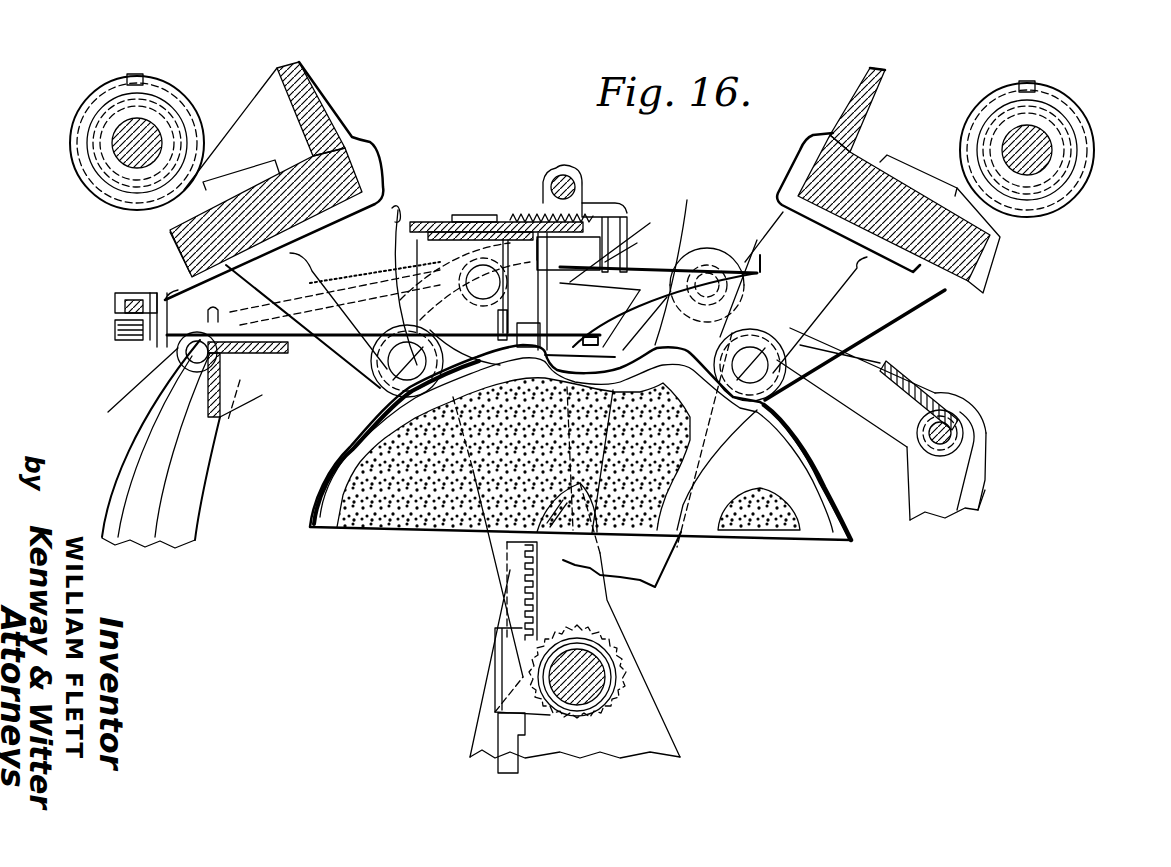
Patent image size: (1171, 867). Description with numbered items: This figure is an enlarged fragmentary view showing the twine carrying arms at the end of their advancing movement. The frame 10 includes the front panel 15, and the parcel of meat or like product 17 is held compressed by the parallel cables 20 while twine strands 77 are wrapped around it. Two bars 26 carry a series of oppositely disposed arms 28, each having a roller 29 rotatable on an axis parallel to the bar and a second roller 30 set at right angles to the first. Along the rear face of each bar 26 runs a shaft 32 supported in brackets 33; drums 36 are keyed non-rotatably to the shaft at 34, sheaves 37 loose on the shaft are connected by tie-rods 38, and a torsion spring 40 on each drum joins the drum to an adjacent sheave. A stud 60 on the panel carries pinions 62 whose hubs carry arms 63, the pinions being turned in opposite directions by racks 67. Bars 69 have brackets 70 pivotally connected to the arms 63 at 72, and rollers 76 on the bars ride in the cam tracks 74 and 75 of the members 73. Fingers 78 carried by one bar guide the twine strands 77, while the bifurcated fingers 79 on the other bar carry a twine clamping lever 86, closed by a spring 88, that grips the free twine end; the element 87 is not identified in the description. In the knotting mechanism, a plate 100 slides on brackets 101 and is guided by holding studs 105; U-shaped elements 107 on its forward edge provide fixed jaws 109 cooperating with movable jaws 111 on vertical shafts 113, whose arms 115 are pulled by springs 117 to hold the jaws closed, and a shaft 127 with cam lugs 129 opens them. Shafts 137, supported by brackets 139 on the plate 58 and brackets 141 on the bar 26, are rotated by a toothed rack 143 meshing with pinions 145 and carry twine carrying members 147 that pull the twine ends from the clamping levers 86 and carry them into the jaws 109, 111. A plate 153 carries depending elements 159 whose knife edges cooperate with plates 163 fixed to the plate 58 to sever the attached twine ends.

The frame 10 is at (673, 747).
The front panel 15 is at (647, 728).
The parcel of meat or like product 17 is at (780, 532).
The cables 20 is at (322, 500).
The bars 26 is at (320, 125).
The arms 28 is at (375, 378).
The roller 29 is at (385, 405).
The second roller 30 is at (365, 422).
The shaft 32 is at (125, 150).
The brackets 33 is at (205, 181).
The key connection 34 is at (110, 105).
The drums 36 is at (92, 130).
The sheaves 37 is at (185, 96).
The tie-rods 38 is at (128, 80).
The torsion spring 40 is at (180, 110).
The plate 58 is at (533, 370).
The stud 60 is at (597, 677).
The pinions 62 is at (633, 688).
The arms 63 is at (602, 610).
The racks 67 is at (503, 747).
The bars 69 is at (210, 420).
The brackets 70 is at (262, 393).
The pivotal connection 72 is at (465, 272).
The members 73 is at (197, 538).
The cam track 74 is at (145, 540).
The cam track 75 is at (958, 500).
The rollers 76 is at (178, 367).
The twine strands 77 is at (120, 402).
The fingers 78 is at (401, 273).
The fingers 79 is at (890, 348).
The twine clamping lever 86 is at (681, 259).
The lever arm 87 is at (620, 243).
The spring 88 is at (667, 283).
The plate 100 is at (423, 218).
The brackets 101 is at (469, 282).
The holding studs 105 is at (458, 215).
The U-shaped elements 107 is at (630, 213).
The fixed twine holding jaw 109 is at (588, 337).
The movable jaw 111 is at (665, 311).
The vertical shaft 113 is at (639, 245).
The arm 115 is at (593, 197).
The springs 117 is at (527, 217).
The shaft 127 is at (553, 180).
The cam lugs 129 is at (573, 197).
The shafts 137 is at (335, 372).
The brackets 139 is at (492, 370).
The brackets 141 is at (165, 300).
The toothed rack 143 is at (115, 303).
The pinions 145 is at (113, 333).
The twine carrying member 147 is at (498, 313).
The plate 153 is at (440, 228).
The elements 159 is at (560, 278).
The plate 163 is at (418, 330).